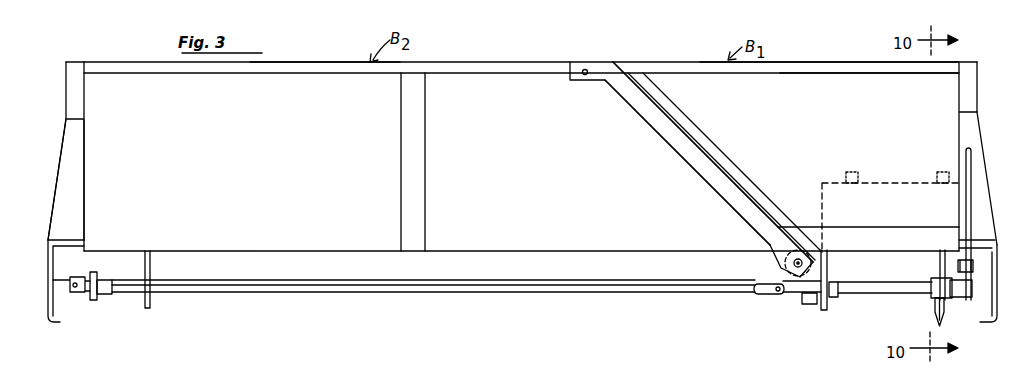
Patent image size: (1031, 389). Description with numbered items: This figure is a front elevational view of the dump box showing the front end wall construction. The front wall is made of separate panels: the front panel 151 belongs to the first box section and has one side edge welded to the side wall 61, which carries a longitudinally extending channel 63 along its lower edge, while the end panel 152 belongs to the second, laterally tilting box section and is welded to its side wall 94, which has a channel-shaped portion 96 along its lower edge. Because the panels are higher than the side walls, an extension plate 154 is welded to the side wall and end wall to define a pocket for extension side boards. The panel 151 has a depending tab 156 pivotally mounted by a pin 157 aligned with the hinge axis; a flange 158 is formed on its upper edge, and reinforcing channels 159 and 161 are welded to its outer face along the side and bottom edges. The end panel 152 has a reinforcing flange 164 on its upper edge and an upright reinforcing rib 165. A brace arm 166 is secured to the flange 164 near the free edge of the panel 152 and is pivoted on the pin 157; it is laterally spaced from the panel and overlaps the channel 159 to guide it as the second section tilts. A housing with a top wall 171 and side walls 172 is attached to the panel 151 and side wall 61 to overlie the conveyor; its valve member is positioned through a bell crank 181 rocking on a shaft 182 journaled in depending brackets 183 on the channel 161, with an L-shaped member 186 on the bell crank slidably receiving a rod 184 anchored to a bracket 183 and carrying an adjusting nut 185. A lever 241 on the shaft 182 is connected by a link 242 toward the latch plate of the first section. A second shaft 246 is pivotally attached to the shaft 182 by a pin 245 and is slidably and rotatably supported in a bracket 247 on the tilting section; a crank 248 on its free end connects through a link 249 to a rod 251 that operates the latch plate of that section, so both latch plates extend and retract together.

The end panel 152 is at (480, 82).
The reinforcing flange 164 is at (315, 66).
The flange 158 is at (862, 68).
The front panel 151 is at (800, 82).
The reinforcing channel 161 is at (66, 86).
The side wall 94 is at (84, 170).
The channel-shaped portion 96 is at (47, 302).
The upright reinforcing rib 165 is at (426, 162).
The reinforcing channel 159 is at (710, 154).
The brace arm 166 is at (680, 138).
The pin 157 is at (799, 270).
The side walls 172 is at (820, 210).
The top wall 171 is at (876, 183).
The depending brackets 183 is at (828, 267).
The depending tab 156 is at (810, 305).
The second shaft 246 is at (648, 293).
The pin 245 is at (778, 294).
The shaft 182 is at (865, 288).
The rod 184 is at (938, 268).
The rod 251 is at (78, 281).
The link 249 is at (82, 297).
The crank 248 is at (104, 296).
The bracket 247 is at (150, 262).
The extension plate 154 is at (970, 85).
The side wall 61 is at (970, 136).
The lever 241 is at (971, 203).
The link 242 is at (997, 247).
The channel 63 is at (998, 262).
The bell crank 181 is at (953, 282).
The adjusting nut 185 is at (933, 312).
The L-shaped member 186 is at (947, 298).